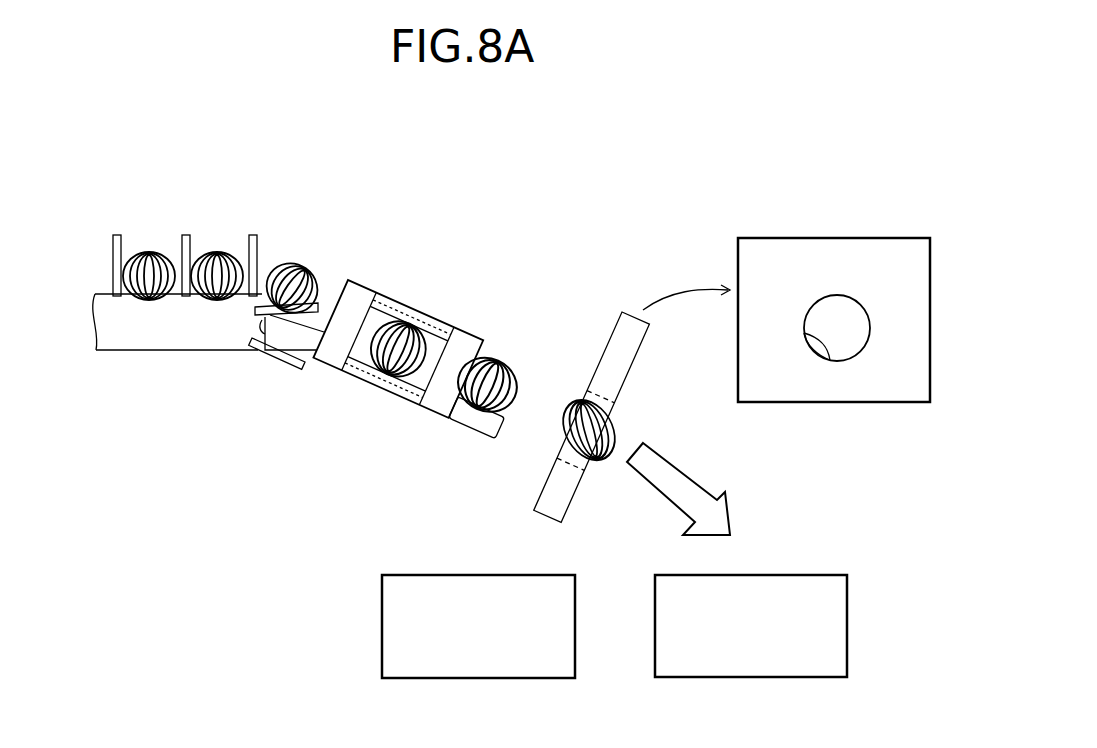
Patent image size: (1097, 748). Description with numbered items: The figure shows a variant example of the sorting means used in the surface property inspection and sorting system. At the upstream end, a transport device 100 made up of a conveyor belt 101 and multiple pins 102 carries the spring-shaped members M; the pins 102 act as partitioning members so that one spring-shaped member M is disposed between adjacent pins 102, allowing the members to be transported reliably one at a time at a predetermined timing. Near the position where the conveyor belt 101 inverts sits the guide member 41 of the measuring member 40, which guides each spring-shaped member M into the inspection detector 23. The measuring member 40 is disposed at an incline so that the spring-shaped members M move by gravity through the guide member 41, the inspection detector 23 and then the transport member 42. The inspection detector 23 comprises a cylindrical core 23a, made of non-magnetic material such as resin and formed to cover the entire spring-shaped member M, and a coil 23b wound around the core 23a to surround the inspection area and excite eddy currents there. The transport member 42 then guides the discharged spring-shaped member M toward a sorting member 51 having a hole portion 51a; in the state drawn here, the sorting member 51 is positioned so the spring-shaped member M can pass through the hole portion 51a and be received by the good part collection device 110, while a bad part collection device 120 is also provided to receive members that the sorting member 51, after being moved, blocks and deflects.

The transport device 100 is at (163, 185).
The conveyor belt 101 is at (94, 293).
The pins 102 is at (123, 242).
The measuring member 40 is at (421, 262).
The guide member 41 is at (290, 337).
The inspection detector 23 is at (433, 312).
The core 23a is at (398, 348).
The coil 23b is at (398, 349).
The spring-shaped member M is at (398, 349).
The transport member 42 is at (483, 393).
The sorting member 51 is at (607, 342).
The hole portion 51a is at (588, 395).
The bad part collection device 120 is at (472, 678).
The good part collection device 110 is at (743, 678).